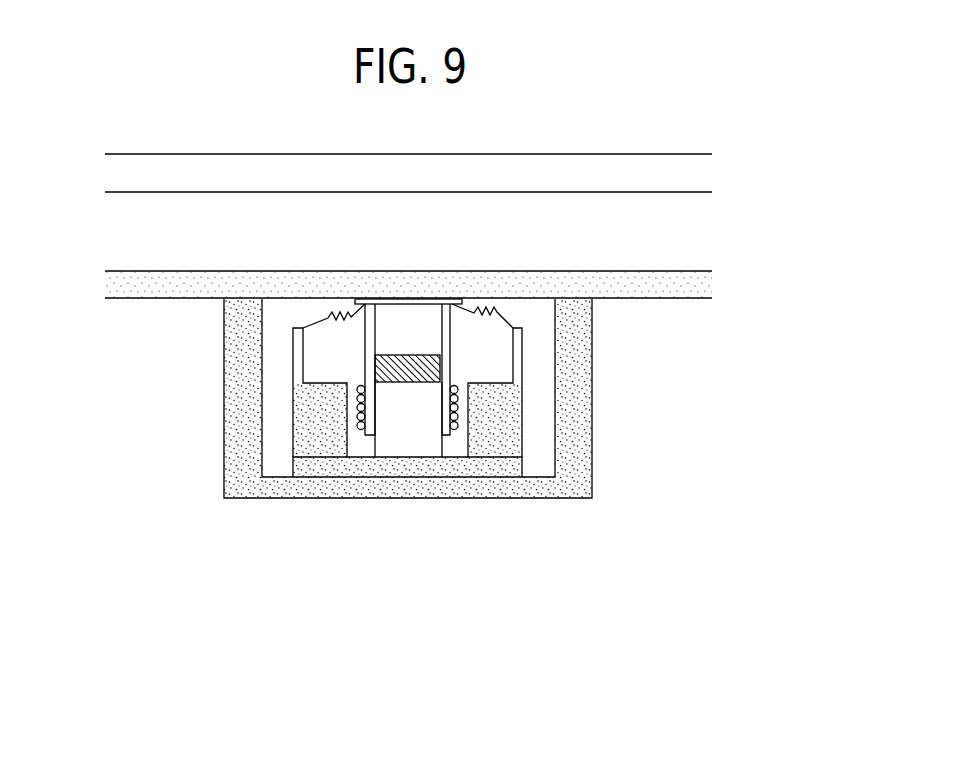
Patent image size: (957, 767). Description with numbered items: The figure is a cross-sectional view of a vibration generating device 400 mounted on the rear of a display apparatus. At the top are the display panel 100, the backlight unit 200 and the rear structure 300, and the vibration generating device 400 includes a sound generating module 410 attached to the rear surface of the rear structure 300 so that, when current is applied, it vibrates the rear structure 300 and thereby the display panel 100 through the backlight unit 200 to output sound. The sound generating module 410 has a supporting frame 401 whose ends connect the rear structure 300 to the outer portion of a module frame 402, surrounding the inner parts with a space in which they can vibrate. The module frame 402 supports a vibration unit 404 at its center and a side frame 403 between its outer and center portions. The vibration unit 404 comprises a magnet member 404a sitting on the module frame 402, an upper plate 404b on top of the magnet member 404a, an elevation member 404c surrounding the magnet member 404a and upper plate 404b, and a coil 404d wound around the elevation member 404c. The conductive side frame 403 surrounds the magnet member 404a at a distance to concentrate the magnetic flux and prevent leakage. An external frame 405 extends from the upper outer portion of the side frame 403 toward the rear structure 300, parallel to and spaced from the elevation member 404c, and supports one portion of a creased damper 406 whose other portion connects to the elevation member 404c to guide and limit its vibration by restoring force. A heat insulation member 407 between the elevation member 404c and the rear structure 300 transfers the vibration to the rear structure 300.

The display panel 100 is at (703, 174).
The backlight unit 200 is at (703, 235).
The rear structure 300 is at (708, 284).
The vibration generating device 400 is at (410, 498).
The supporting frame 401 is at (225, 428).
The module frame 402 is at (493, 472).
The side frame 403 is at (493, 428).
The vibration unit 404 is at (409, 445).
The magnet member 404a is at (428, 437).
The upper plate 404b is at (395, 370).
The elevation member 404c is at (369, 437).
The coil 404d is at (383, 467).
The external frame 405 is at (300, 355).
The damper 406 is at (487, 318).
The heat insulation member 407 is at (377, 297).
The sound generating module 410 is at (410, 452).